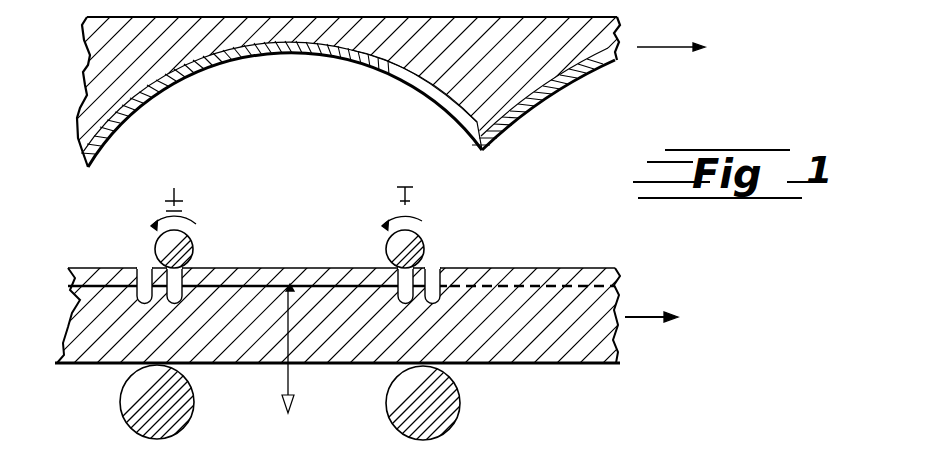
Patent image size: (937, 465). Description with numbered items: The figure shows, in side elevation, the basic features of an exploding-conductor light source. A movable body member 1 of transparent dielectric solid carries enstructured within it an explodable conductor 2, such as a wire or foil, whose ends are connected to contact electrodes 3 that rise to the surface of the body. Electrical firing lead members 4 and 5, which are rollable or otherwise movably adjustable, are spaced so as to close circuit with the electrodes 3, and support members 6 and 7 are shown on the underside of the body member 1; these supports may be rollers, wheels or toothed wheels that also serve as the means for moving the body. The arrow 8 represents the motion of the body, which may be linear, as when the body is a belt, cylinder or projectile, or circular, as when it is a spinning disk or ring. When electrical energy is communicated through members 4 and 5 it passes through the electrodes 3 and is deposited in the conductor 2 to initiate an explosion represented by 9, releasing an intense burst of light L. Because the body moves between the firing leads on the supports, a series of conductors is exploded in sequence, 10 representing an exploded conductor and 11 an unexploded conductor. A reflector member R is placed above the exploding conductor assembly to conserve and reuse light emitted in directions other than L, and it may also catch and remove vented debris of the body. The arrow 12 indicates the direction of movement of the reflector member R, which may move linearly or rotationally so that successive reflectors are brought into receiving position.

The movable body member 1 is at (480, 355).
The explodable conductor 2 is at (228, 271).
The contact electrodes 3 is at (173, 283).
The electrical firing lead member 4 is at (419, 241).
The electrical firing lead member 5 is at (187, 236).
The support member 6 is at (160, 402).
The support member 7 is at (437, 403).
The motion arrow 8 is at (651, 330).
The explosion 9 is at (291, 282).
The exploded conductor 10 is at (497, 281).
The unexploded conductor 11 is at (112, 313).
The direction arrow 12 is at (671, 60).
The reflector member R is at (402, 72).
The light L is at (288, 362).